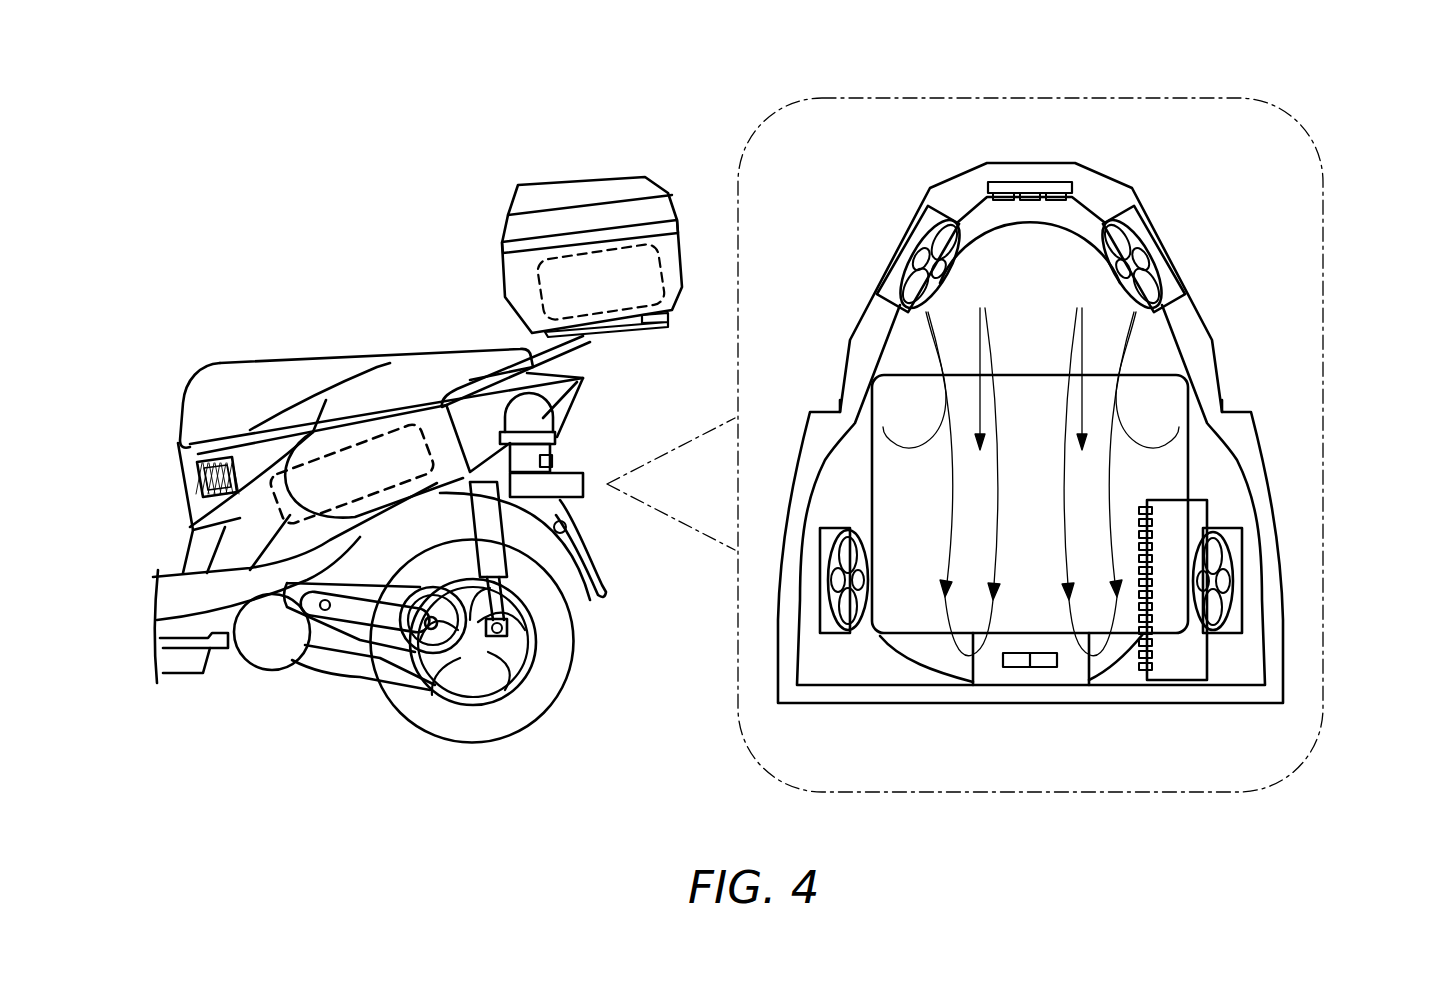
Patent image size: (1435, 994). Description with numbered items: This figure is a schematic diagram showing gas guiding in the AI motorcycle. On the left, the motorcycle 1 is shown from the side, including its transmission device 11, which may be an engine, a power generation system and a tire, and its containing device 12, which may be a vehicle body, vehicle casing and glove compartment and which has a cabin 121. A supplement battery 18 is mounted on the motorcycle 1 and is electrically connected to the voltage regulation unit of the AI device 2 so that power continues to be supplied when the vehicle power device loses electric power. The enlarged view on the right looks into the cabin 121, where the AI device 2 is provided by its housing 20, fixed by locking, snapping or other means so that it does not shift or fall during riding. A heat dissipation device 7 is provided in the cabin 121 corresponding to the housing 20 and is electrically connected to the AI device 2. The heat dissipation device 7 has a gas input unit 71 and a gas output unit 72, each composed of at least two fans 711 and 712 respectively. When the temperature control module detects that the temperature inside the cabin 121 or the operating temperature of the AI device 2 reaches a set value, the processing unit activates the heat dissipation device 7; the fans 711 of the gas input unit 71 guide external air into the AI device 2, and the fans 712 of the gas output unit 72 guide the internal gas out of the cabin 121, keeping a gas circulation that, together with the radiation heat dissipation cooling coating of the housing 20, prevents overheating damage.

The motorcycle 1 is at (182, 318).
The transmission device 11 is at (380, 720).
The containing device 12 is at (402, 352).
The cabin 121 is at (1028, 262).
The supplement battery 18 is at (618, 232).
The AI device 2 is at (1222, 672).
The housing 20 is at (1180, 667).
The heat dissipation device 7 is at (1388, 222).
The gas input unit 71 is at (1188, 238).
The fan 711 is at (930, 220).
The fan 712 is at (830, 622).
The gas output unit 72 is at (1262, 537).